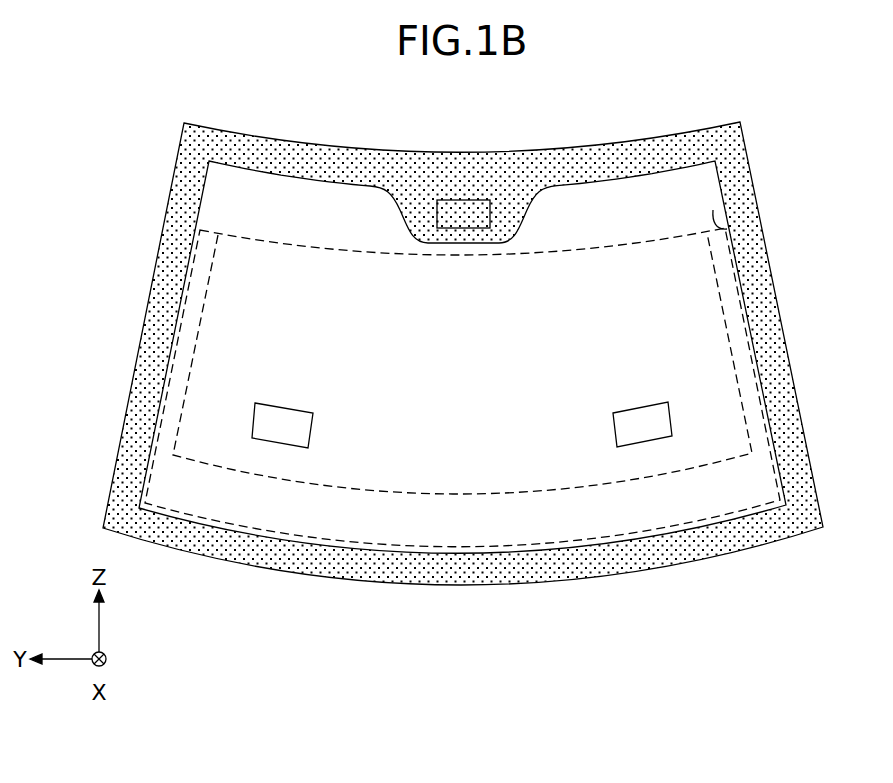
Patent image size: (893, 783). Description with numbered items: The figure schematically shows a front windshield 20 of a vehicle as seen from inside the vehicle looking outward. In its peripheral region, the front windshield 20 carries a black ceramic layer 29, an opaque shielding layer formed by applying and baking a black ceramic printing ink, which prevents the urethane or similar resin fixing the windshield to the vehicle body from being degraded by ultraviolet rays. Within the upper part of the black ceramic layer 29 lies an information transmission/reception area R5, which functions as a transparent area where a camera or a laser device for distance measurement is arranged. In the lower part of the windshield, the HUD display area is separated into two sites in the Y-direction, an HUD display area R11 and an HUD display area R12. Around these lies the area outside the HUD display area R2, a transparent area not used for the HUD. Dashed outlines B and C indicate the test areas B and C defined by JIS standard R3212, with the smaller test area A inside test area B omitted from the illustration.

The front windshield 20 is at (452, 337).
The black ceramic layer 29 is at (653, 142).
The information transmission/reception area R5 is at (463, 208).
The HUD display area R11 is at (278, 435).
The HUD display area R12 is at (640, 433).
The area outside the HUD display area R2 is at (770, 485).
The test area B is at (718, 291).
The test area C is at (713, 210).